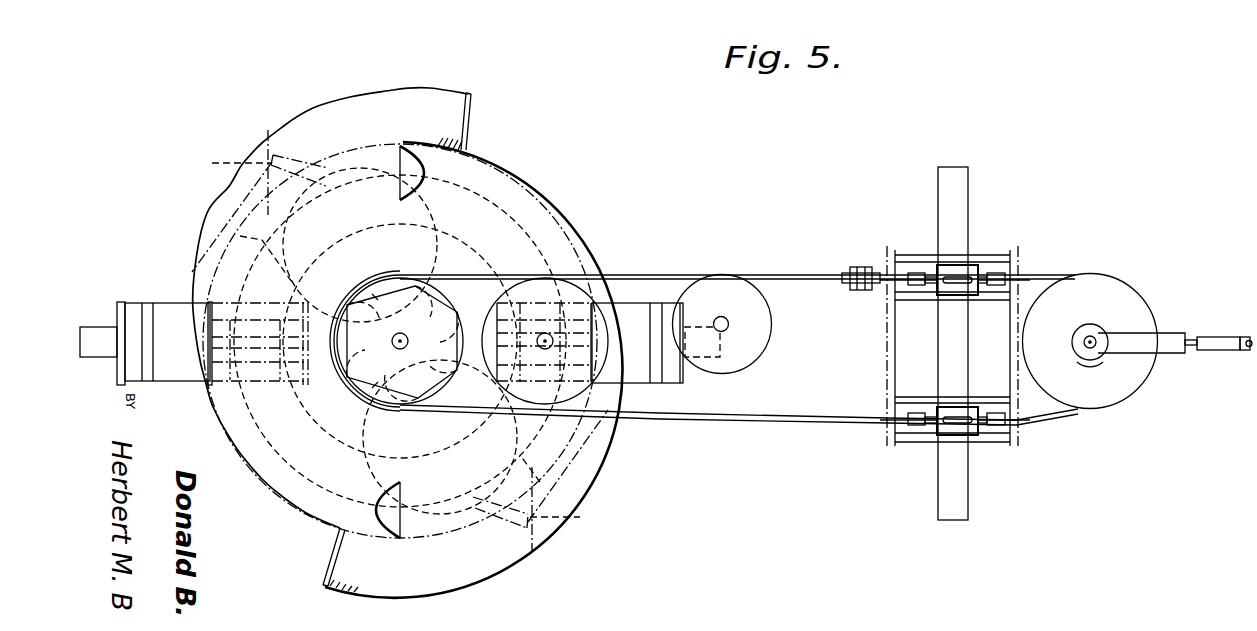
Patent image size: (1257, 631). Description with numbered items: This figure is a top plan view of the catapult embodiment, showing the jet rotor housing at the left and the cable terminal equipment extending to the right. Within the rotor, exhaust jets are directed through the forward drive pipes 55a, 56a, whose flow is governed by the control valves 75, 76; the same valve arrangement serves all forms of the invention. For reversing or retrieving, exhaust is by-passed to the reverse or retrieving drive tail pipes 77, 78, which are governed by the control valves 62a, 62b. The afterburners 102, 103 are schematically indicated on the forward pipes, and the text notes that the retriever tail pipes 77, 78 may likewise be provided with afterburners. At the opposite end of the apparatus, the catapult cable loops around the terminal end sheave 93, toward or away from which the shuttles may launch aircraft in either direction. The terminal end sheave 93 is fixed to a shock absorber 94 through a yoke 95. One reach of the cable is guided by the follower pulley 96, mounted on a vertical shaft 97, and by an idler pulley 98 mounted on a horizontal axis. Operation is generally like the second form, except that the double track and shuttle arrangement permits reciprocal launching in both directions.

The afterburner 102 is at (273, 155).
The forward drive pipe 55a is at (256, 254).
The afterburner 103 is at (530, 533).
The forward drive pipe 56a is at (540, 482).
The reverse or retrieving drive tail pipe 77 is at (469, 127).
The reverse or retrieving drive tail pipe 78 is at (331, 524).
The control valve 62b is at (692, 352).
The control valve 75 is at (404, 277).
The control valve 76 is at (428, 406).
The control valve 62a is at (470, 262).
The follower pulley 96 is at (731, 291).
The vertical shaft 97 is at (729, 327).
The idler pulley 98 is at (868, 267).
The terminal end sheave 93 is at (1070, 298).
The yoke 95 is at (1163, 333).
The shock absorber 94 is at (1210, 338).